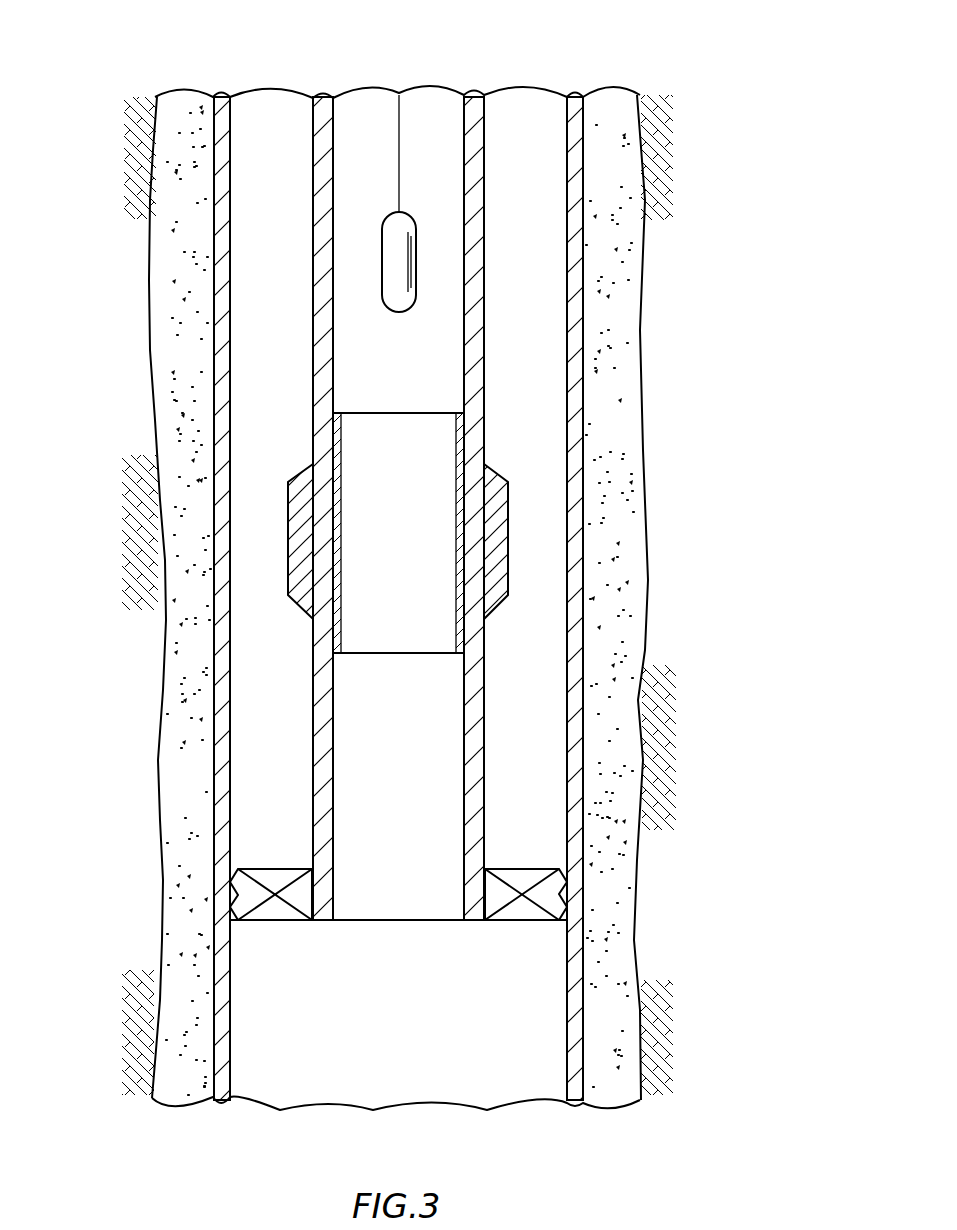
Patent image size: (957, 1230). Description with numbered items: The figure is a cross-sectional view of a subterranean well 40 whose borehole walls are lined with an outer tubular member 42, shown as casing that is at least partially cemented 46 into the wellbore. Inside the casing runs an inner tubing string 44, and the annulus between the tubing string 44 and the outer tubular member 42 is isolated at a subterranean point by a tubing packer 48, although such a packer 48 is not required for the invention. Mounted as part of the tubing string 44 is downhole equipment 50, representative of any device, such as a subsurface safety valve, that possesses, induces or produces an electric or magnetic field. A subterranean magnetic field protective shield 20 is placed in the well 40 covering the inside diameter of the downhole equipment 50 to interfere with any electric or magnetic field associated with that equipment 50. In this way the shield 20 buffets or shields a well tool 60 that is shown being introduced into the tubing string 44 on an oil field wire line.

The subterranean well 40 is at (730, 63).
The outer tubular member 42 is at (582, 767).
The inner tubing string 44 is at (485, 718).
The cement 46 is at (611, 1122).
The tubing packer 48 is at (250, 893).
The downhole equipment 50 is at (510, 523).
The subterranean magnetic field protective shield 20 is at (333, 428).
The well tool 60 is at (382, 255).